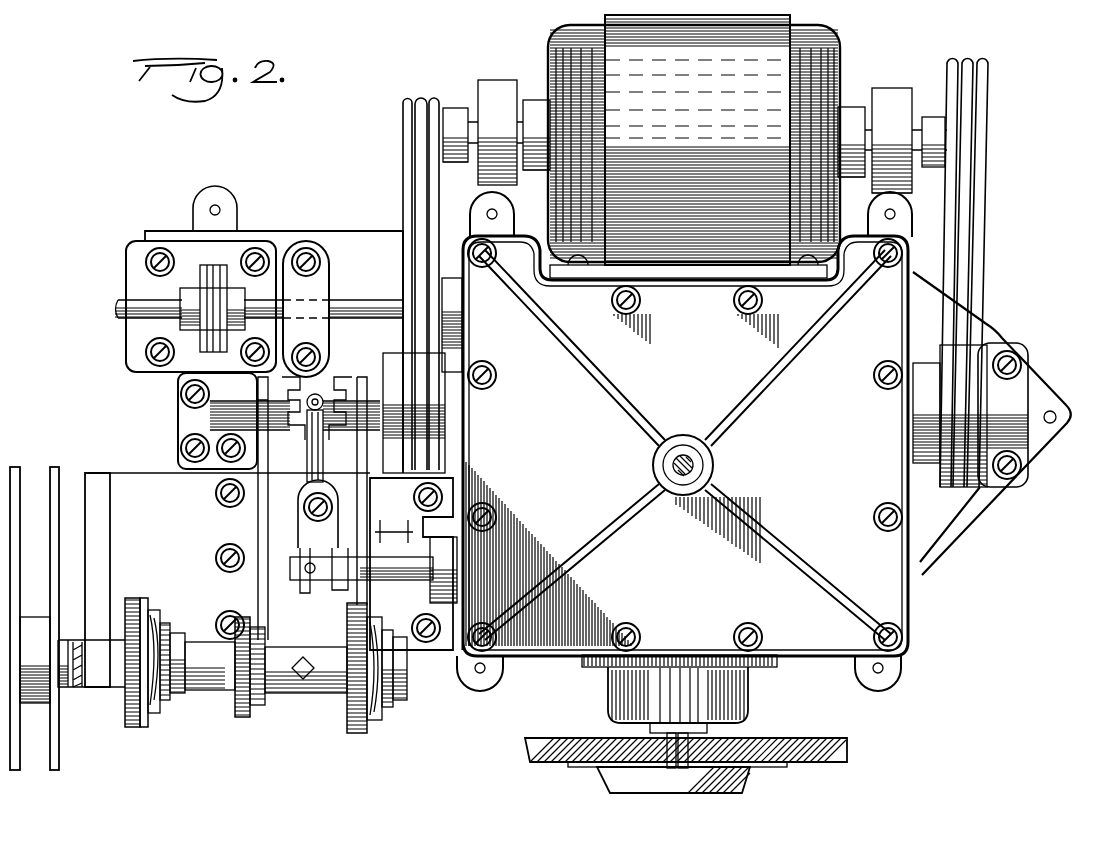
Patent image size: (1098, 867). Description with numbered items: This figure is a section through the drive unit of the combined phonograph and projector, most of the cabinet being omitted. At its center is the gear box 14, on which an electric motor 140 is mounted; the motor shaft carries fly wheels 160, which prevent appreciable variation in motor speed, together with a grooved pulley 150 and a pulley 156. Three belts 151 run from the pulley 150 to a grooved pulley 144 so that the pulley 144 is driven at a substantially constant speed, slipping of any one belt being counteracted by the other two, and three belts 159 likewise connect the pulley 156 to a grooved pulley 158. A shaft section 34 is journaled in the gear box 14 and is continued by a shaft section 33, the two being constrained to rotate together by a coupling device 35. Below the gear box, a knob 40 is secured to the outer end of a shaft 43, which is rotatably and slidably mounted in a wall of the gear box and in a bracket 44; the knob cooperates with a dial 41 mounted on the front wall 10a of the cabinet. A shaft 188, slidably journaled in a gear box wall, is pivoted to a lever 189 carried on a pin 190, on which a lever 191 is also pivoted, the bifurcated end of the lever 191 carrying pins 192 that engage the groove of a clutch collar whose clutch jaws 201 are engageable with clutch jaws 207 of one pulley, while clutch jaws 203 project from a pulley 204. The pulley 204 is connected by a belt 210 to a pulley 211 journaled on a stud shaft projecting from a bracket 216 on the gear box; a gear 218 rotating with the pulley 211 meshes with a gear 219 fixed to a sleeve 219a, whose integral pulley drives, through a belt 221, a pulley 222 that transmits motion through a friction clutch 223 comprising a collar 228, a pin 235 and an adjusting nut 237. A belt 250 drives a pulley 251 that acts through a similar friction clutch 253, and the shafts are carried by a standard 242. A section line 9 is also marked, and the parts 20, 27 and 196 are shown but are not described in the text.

The gear box 14 is at (827, 656).
The main shaft hub 20 is at (705, 468).
The electric motor 140 is at (776, 36).
The fly wheels 160 is at (492, 92).
The grooved pulley 150 is at (454, 114).
The belts 151 is at (425, 213).
The pulley 156 is at (990, 130).
The belts 159 is at (968, 256).
The grooved pulley 158 is at (933, 488).
The grooved pulley 144 is at (440, 456).
The bracket 44 is at (673, 734).
The shaft 43 is at (690, 742).
The front wall 10a is at (848, 752).
The dial 41 is at (790, 767).
The knob 40 is at (745, 786).
The shaft section 33 is at (120, 300).
The shaft section 34 is at (360, 308).
The coupling device 35 is at (200, 282).
The pulley 204 is at (262, 385).
The belt 210 is at (262, 523).
The clutch jaws 203 is at (280, 392).
The clutch jaws 201 is at (335, 378).
The clutch jaws 207 is at (350, 380).
The pins 192 is at (322, 415).
The lever 196 is at (308, 455).
The lever 191 is at (319, 472).
The lever 189 is at (300, 544).
The pin 190 is at (307, 498).
The shaft 188 is at (393, 574).
The belt 250 is at (366, 487).
The pulley 27 is at (57, 745).
The standard 242 is at (110, 532).
The pulley 222 is at (128, 722).
The belt 221 is at (136, 607).
The collar 228 is at (163, 618).
The friction clutch 223 is at (156, 704).
The pin 235 is at (160, 662).
The nut 237 is at (180, 698).
The sleeve 219a is at (200, 652).
The gear 219 is at (240, 722).
The pulley 211 is at (262, 706).
The bracket 216 is at (320, 692).
The gear 218 is at (248, 666).
The pulley 251 is at (365, 735).
The friction clutch 253 is at (375, 640).
The section line 9- 9 is at (363, 175).